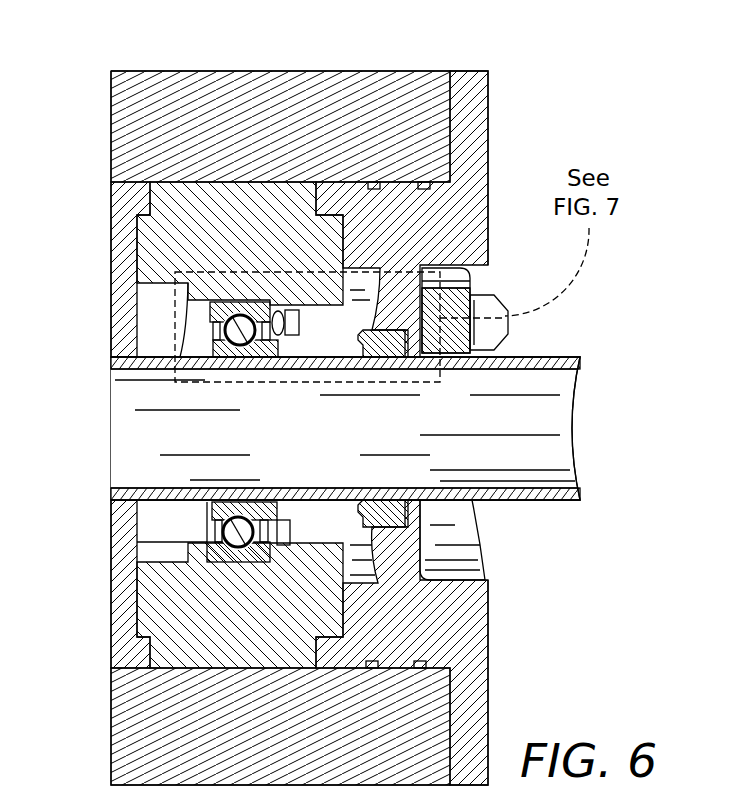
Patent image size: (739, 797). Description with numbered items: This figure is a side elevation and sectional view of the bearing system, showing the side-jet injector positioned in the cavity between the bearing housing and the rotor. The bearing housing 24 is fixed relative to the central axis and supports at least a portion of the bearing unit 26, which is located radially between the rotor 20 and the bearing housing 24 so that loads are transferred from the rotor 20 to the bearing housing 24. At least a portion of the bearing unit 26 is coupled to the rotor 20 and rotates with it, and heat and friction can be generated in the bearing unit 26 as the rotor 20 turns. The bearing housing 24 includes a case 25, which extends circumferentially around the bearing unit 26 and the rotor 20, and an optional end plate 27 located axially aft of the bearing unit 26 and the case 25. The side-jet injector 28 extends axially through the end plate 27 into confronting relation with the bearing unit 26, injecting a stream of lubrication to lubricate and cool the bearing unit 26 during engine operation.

The rotor 20 is at (560, 354).
The bearing housing 24 is at (207, 64).
The case 25 is at (318, 94).
The bearing unit 26 is at (200, 330).
The end plate 27 is at (504, 130).
The side-jet injector 28 is at (512, 289).